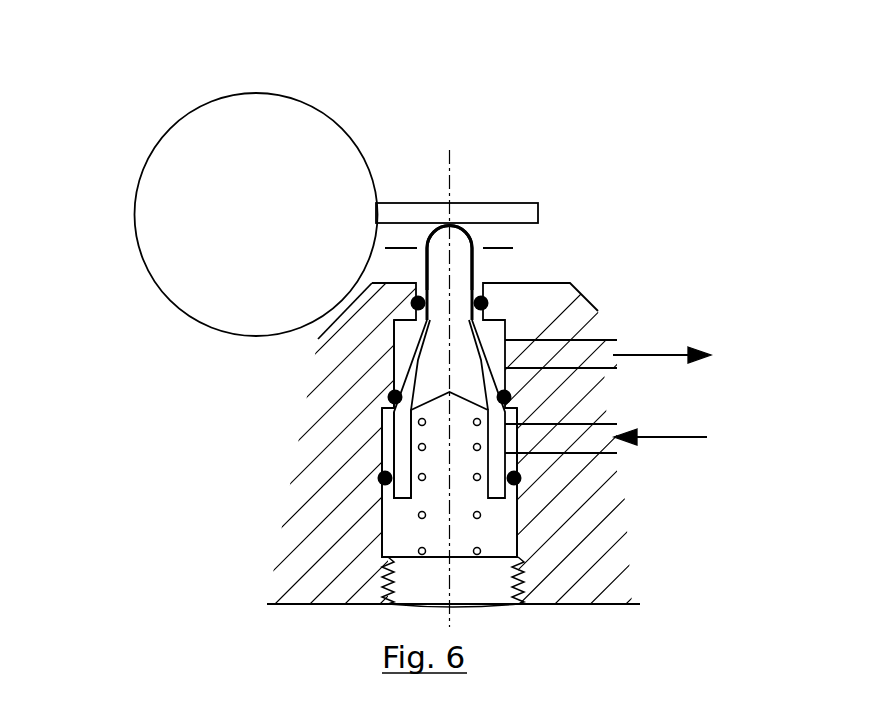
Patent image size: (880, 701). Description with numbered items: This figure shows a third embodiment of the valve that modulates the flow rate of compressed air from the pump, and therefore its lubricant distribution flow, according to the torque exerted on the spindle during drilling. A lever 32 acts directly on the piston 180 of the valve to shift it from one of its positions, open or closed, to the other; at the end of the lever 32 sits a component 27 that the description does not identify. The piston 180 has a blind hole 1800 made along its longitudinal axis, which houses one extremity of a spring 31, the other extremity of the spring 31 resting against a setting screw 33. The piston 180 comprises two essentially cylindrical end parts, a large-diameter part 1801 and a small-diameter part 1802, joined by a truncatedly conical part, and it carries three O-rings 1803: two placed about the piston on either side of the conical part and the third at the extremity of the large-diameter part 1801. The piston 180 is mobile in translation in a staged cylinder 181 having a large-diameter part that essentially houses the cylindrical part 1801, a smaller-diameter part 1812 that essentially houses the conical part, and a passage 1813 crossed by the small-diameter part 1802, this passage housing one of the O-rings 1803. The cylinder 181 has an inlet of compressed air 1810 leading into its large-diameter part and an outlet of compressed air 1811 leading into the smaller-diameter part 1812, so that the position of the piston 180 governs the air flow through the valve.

The ball 27 is at (313, 103).
The lever 32 is at (525, 215).
The spring 31 is at (418, 516).
The setting screw 33 is at (416, 587).
The piston 180 is at (483, 360).
The cylindrical end part with large diameter 1801 is at (400, 437).
The cylindrical end part with small diameter 1802 is at (427, 263).
The O-rings 1803 is at (482, 302).
The blind hole 1800 is at (442, 463).
The staged cylinder 181 is at (483, 337).
The outlet of compressed air 1811 is at (585, 355).
The part with a smaller diameter 1812 is at (393, 343).
The passage 1813 is at (480, 258).
The inlet of compressed air 1810 is at (585, 440).